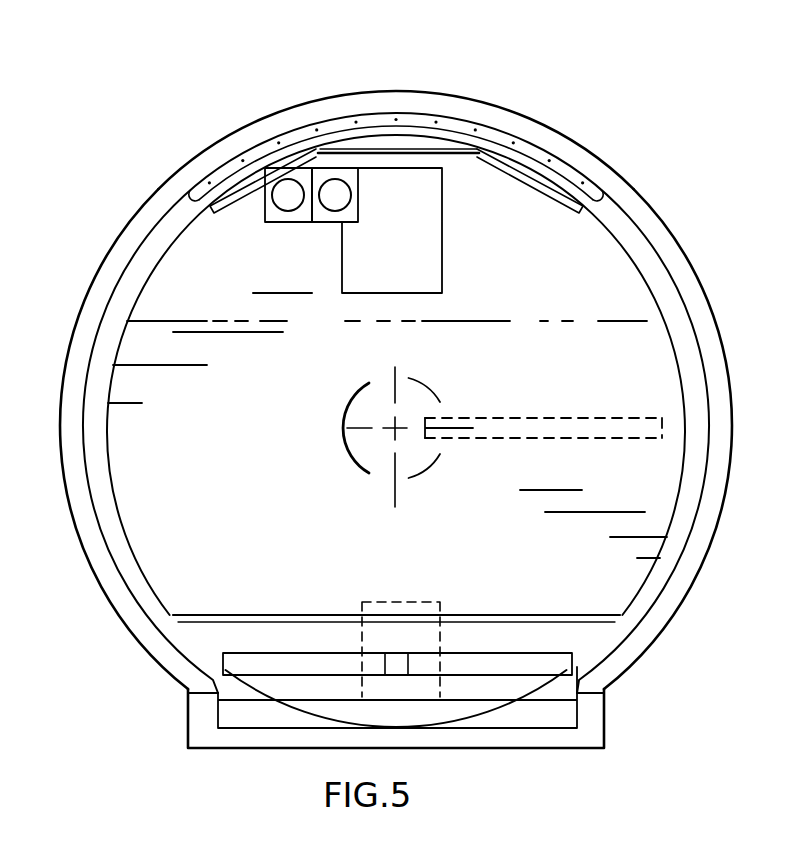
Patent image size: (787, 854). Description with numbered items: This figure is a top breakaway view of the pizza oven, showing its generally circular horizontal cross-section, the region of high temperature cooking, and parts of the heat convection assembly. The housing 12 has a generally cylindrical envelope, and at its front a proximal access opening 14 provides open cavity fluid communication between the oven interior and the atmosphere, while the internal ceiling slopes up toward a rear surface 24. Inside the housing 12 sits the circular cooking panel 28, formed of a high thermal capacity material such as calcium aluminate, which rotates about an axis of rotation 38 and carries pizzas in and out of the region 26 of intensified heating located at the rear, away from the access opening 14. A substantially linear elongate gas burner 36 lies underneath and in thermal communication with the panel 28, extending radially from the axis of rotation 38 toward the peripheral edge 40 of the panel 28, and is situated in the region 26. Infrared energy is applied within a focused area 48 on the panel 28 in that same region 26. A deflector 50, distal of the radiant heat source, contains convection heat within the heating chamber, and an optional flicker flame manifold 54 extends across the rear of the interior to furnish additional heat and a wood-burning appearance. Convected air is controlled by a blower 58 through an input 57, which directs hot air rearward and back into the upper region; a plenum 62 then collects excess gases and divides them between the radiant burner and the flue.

The housing 12 is at (722, 518).
The proximal access opening 14 is at (569, 719).
The rear surface 24 is at (400, 91).
The region of intensified heating 26 is at (377, 318).
The focused area 48 is at (377, 318).
The cooking panel 28 is at (475, 537).
The gas burner 36 is at (663, 433).
The axis of rotation 38 is at (428, 410).
The peripheral edge 40 is at (671, 548).
The deflector 50 is at (318, 148).
The flicker flame manifold 54 is at (216, 174).
The input 57 is at (578, 695).
The blower 58 is at (440, 612).
The plenum 62 is at (427, 180).